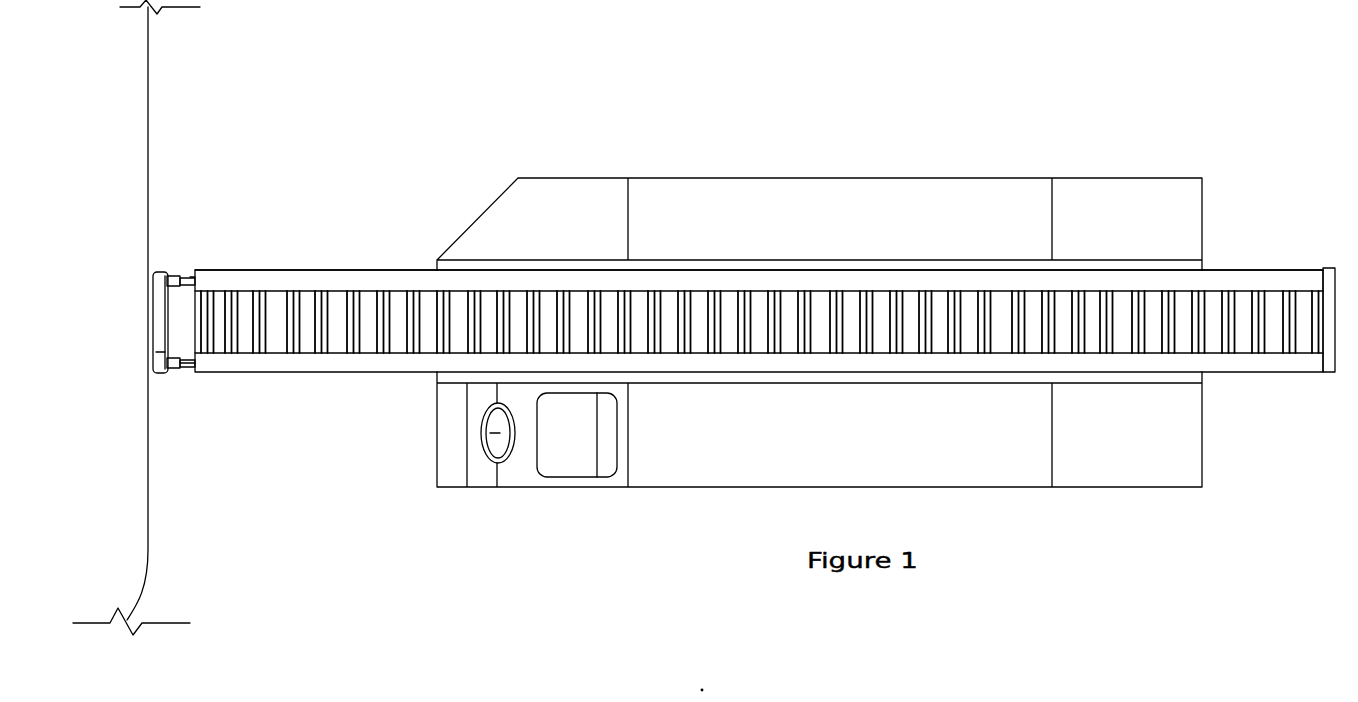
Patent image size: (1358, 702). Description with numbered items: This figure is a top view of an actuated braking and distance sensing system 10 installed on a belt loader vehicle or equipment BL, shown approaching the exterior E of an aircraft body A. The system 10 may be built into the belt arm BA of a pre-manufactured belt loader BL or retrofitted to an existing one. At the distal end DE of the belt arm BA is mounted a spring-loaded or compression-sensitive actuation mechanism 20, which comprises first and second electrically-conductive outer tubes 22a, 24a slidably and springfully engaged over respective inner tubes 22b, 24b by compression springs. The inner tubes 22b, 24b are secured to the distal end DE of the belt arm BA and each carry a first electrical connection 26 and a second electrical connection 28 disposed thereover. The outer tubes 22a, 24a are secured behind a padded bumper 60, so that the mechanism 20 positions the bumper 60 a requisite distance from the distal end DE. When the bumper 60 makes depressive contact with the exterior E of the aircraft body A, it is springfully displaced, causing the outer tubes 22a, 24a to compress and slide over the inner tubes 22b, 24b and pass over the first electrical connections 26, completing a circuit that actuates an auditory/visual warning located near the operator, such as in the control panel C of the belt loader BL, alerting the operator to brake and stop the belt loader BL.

The actuated braking and distance sensing system 10 is at (222, 388).
The spring-loaded or compression-sensitive actuation mechanism 20 is at (148, 277).
The first electrically-conductive outer tube 22a is at (175, 276).
The first inner tube 22b is at (170, 316).
The second electrically-conductive outer tube 24a is at (171, 370).
The second inner tube 24b is at (182, 372).
The first electrical connection 26 is at (187, 278).
The second electrical connection 28 is at (191, 277).
The padded bumper 60 is at (160, 352).
The exterior of aircraft body E is at (148, 188).
The aircraft body A is at (88, 522).
The belt arm BA is at (388, 278).
The belt loader vehicle or equipment BL is at (997, 222).
The control panel C is at (487, 470).
The distal end of belt arm DE is at (187, 372).